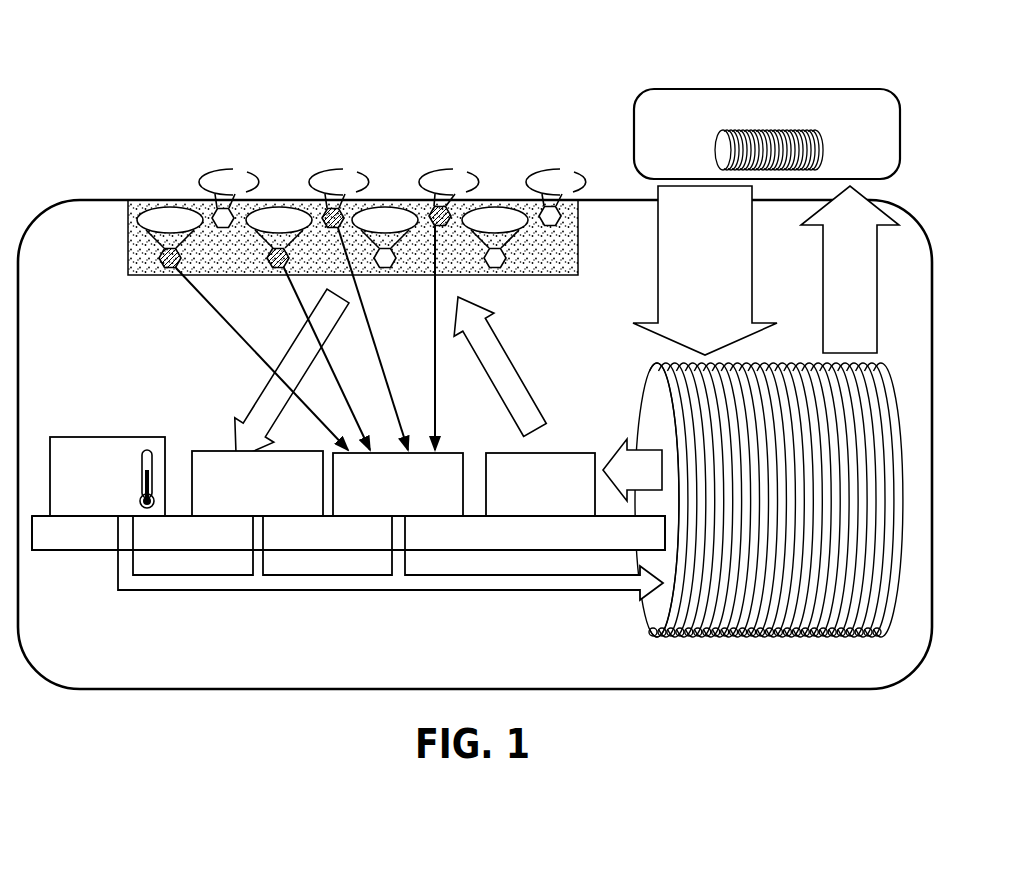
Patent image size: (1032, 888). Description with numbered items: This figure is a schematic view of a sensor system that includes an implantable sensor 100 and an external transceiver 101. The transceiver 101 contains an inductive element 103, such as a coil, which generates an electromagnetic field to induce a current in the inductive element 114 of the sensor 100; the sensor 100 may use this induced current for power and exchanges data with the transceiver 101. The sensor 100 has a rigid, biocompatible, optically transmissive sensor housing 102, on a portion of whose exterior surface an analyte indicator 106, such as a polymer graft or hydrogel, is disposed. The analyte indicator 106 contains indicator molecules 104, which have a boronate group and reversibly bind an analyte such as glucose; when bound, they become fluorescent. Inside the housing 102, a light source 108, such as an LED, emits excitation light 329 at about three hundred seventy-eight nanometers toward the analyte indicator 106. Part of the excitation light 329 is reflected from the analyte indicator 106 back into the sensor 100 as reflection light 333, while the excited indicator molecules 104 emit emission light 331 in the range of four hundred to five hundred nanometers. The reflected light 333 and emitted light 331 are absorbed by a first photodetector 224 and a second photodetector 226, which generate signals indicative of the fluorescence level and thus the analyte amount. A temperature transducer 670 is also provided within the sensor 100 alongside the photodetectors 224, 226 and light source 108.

The sensor 100 is at (138, 155).
The external transceiver 101 is at (736, 89).
The sensor housing 102 is at (222, 690).
The inductive element 103 is at (705, 147).
The indicator molecules 104 is at (361, 138).
The analyte indicator 106 is at (309, 146).
The light source 108 is at (565, 450).
The inductive element 114 is at (770, 640).
The first photodetector 224 is at (445, 450).
The second photodetector 226 is at (218, 450).
The excitation light 329 is at (505, 350).
The emission light 331 is at (413, 327).
The reflection light 333 is at (260, 393).
The temperature transducer 670 is at (100, 437).